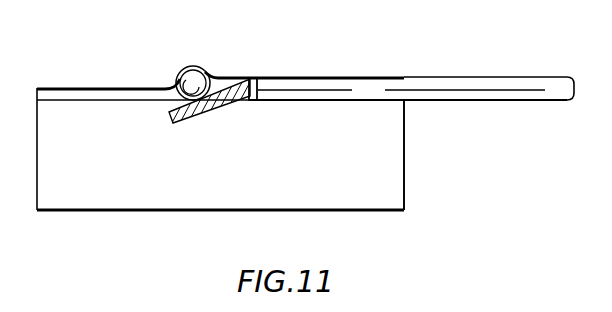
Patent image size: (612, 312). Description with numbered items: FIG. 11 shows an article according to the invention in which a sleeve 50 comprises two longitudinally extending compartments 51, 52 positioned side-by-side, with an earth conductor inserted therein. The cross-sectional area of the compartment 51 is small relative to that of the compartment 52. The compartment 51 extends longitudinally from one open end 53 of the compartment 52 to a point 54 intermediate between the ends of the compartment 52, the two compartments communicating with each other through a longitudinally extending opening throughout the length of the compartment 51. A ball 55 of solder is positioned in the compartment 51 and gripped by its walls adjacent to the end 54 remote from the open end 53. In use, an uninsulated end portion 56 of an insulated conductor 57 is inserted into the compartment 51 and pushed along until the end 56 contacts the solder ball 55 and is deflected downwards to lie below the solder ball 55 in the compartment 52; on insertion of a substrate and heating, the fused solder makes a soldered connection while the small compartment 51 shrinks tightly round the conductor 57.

The sleeve 50 is at (97, 219).
The compartment 51 is at (229, 77).
The compartment 52 is at (222, 188).
The open end 53 is at (418, 158).
The point 54 is at (172, 88).
The ball of solder 55 is at (196, 72).
The uninsulated end portion 56 is at (255, 78).
The insulated conductor 57 is at (446, 70).